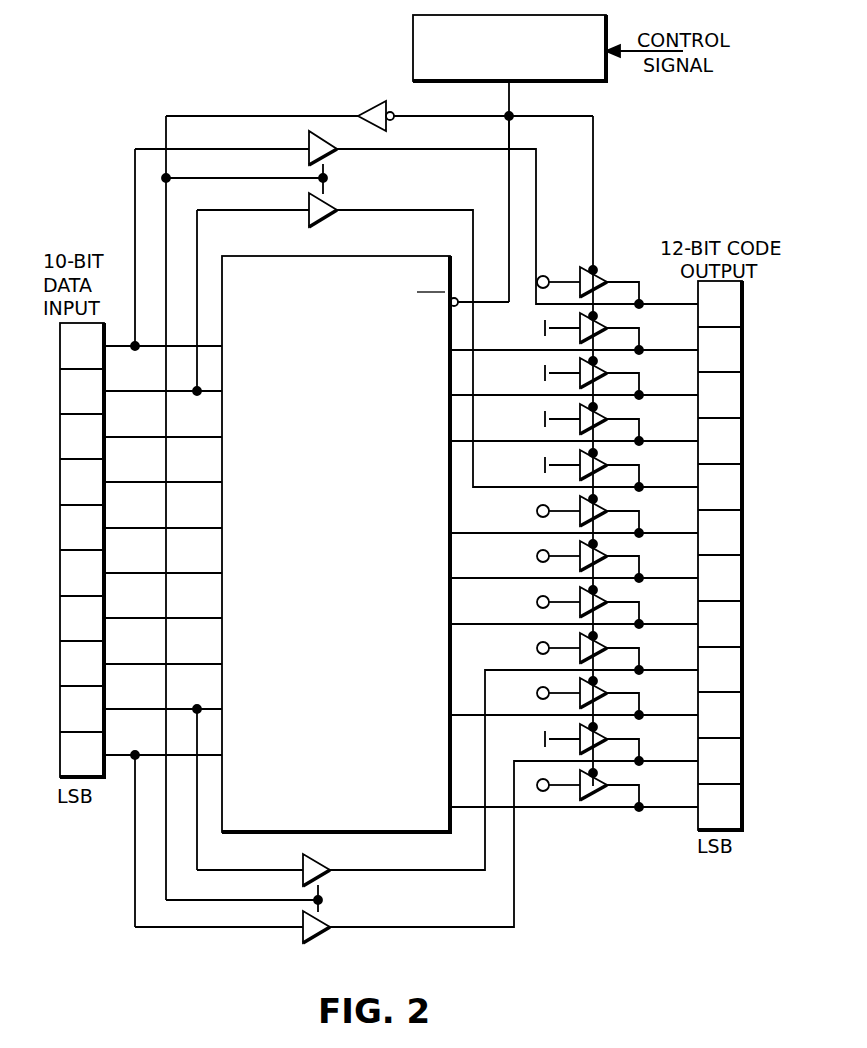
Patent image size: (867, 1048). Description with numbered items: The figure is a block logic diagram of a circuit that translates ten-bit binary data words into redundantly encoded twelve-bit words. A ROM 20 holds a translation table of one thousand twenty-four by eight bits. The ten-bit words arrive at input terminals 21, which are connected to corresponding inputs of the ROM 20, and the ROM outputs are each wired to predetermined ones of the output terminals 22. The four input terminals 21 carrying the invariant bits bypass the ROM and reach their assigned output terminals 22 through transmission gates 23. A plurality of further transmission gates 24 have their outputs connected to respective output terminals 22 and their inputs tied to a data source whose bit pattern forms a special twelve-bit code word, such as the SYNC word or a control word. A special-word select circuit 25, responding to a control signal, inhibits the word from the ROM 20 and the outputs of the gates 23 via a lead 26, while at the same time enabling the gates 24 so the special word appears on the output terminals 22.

The ROM 20 is at (334, 763).
The input terminals 21 is at (105, 609).
The output terminals 22 is at (742, 638).
The transmission gates 23 is at (328, 158).
The transmission gates 24 is at (600, 272).
The special-word select circuit 25 is at (600, 82).
The lead 26 is at (511, 140).